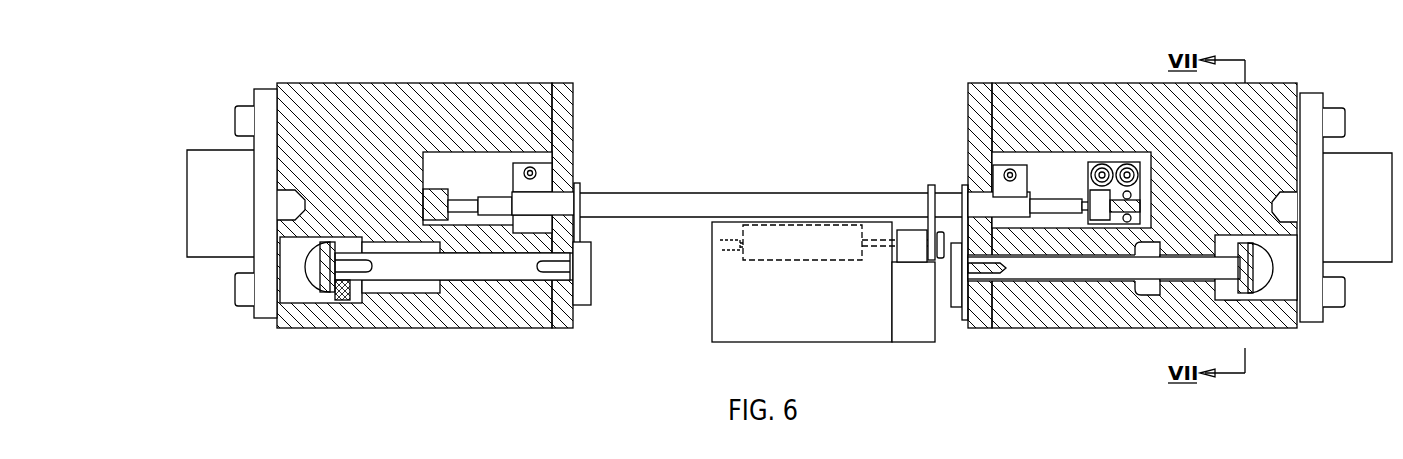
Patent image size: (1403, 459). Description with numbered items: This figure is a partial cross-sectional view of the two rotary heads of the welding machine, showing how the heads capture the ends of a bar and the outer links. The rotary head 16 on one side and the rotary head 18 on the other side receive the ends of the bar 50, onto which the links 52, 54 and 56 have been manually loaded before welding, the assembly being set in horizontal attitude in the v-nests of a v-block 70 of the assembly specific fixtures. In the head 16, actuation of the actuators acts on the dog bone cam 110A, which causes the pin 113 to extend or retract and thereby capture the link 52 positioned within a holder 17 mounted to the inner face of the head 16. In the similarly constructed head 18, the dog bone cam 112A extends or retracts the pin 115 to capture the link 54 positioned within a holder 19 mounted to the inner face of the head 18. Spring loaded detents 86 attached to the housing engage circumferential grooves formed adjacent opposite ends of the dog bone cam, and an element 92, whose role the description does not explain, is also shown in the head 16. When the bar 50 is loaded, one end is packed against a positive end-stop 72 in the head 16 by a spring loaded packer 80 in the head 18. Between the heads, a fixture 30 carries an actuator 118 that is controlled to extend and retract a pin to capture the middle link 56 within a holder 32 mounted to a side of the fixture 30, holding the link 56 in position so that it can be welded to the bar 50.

The rotary head 16 is at (497, 83).
The holder 17 is at (591, 280).
The rotary head 18 is at (1033, 83).
The holder 19 is at (955, 243).
The fixture 30 is at (840, 222).
The holder 32 is at (937, 262).
The bar 50 is at (699, 193).
The link 52 is at (578, 183).
The link 54 is at (964, 185).
The middle link 56 is at (931, 185).
The v-block 70 is at (548, 227).
The positive end-stop 72 is at (441, 189).
The spring loaded packer 80 is at (1088, 175).
The spring loaded detents 86 is at (345, 300).
The sensor 92 is at (553, 172).
The dog bone cam 110A is at (332, 300).
The dog bone cam 112A is at (1268, 293).
The pin 113 is at (474, 265).
The pin 115 is at (1035, 270).
The actuator 118 is at (778, 222).